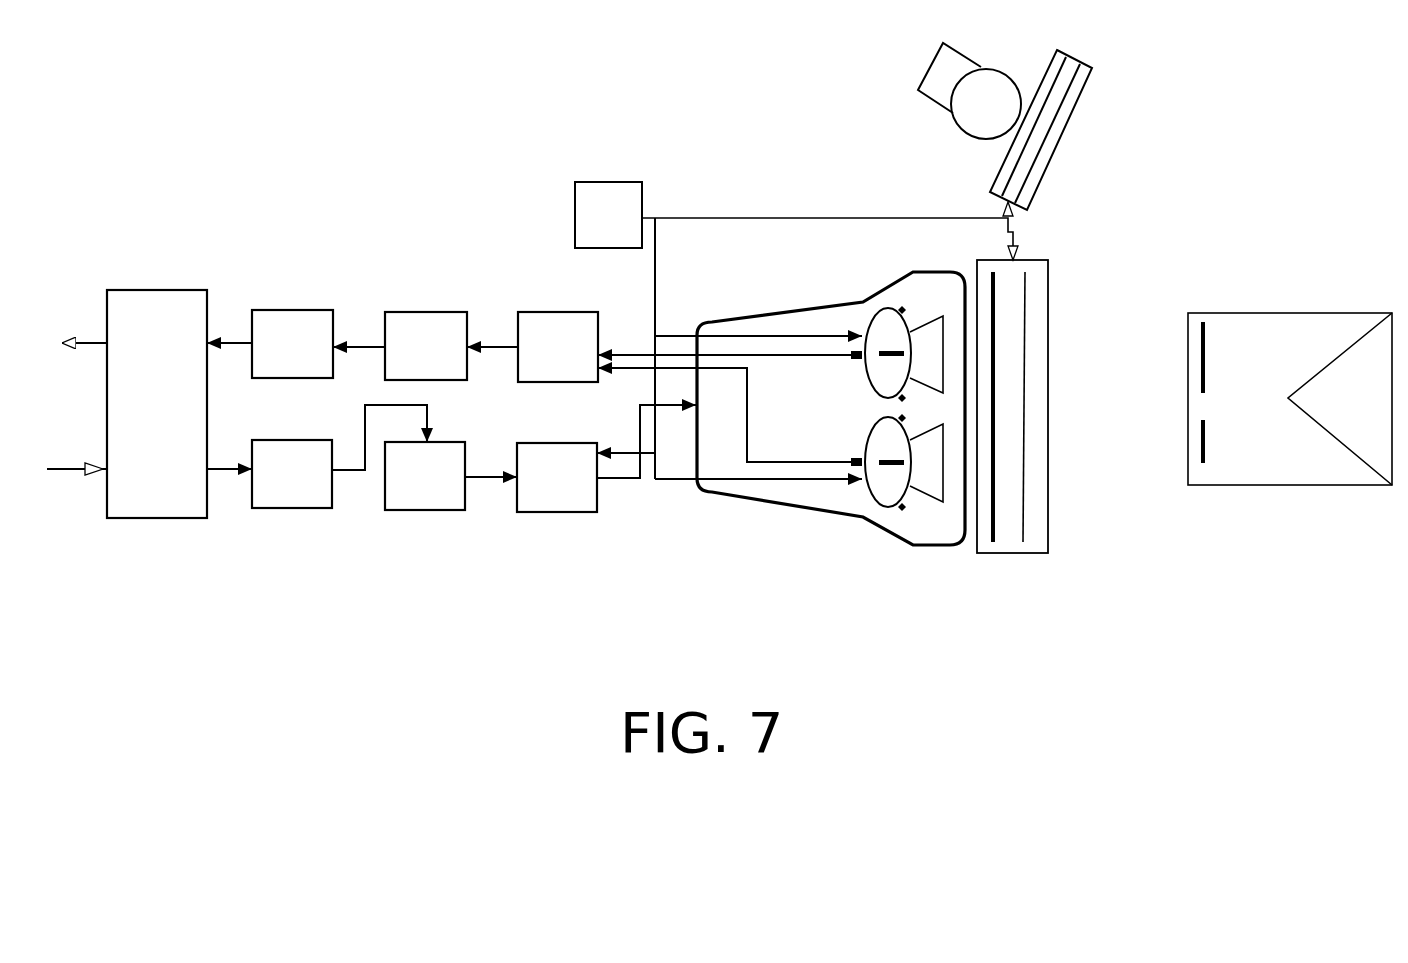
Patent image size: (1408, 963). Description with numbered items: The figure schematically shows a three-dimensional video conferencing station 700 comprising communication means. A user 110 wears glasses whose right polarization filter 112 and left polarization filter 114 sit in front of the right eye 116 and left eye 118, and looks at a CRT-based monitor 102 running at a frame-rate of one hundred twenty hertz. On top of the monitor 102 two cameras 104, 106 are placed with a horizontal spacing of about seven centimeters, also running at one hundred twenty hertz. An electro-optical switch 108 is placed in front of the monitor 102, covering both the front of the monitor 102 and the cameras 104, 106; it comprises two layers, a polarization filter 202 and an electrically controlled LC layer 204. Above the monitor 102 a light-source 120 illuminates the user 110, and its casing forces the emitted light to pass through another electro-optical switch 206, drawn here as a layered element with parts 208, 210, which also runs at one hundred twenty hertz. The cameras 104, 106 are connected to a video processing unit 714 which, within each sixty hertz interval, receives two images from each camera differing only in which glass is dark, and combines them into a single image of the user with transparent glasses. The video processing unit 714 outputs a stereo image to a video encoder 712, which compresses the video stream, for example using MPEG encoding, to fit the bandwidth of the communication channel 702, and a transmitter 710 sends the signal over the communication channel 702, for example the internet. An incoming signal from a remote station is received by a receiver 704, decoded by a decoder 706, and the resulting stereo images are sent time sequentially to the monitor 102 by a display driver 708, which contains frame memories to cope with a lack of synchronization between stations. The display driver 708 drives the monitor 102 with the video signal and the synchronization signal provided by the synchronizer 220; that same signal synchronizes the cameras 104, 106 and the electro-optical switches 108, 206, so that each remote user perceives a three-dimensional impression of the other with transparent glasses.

The communication channel 702 is at (183, 507).
The receiver 704 is at (302, 497).
The decoder 706 is at (435, 502).
The display driver 708 is at (555, 505).
The transmitter 710 is at (290, 316).
The video encoder 712 is at (424, 312).
The video processing unit 714 is at (545, 330).
The synchronizer 220 is at (600, 180).
The monitor 102 is at (781, 327).
The camera 104 is at (892, 319).
The camera 106 is at (882, 488).
The electro-optical switch 108 is at (1022, 553).
The polarization filter 202 is at (992, 540).
The electrically controlled LC layer 204 is at (1024, 540).
The light-source 120 is at (1000, 80).
The electro-optical switch 206 is at (1092, 66).
The first filter layer 208 is at (1040, 110).
The second filter layer 210 is at (1067, 100).
The 3D video conferencing station 700 is at (1236, 208).
The user 110 is at (1348, 345).
The right polarization filter 112 is at (1197, 343).
The left polarization filter 114 is at (1200, 445).
The right eye 116 is at (1225, 373).
The left eye 118 is at (1225, 432).